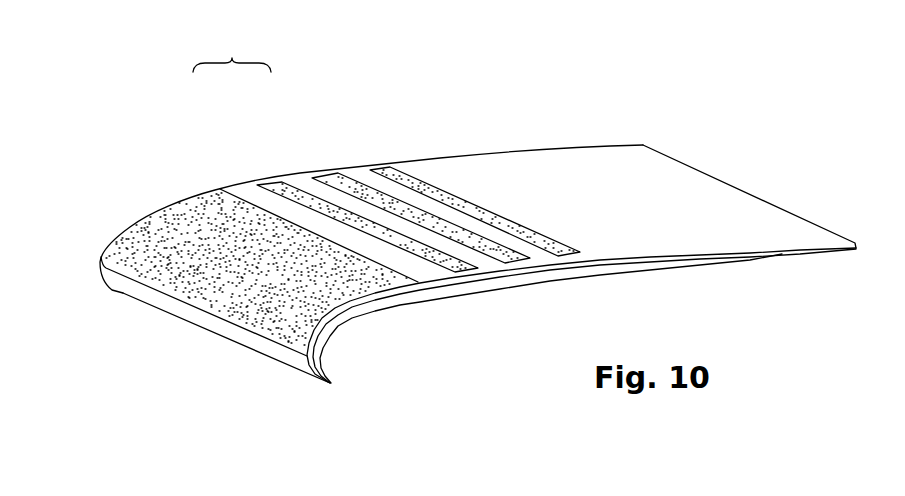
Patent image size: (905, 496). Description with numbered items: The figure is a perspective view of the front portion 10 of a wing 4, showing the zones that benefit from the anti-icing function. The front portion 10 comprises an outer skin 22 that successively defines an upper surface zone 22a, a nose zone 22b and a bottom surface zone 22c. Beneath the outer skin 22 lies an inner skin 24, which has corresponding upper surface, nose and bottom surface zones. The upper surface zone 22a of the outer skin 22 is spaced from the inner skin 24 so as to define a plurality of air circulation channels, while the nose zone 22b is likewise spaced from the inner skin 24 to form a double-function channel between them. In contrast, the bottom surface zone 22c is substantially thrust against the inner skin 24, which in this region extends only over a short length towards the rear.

The vehicle structure 4 is at (469, 237).
The front portion 10 is at (216, 145).
The outer skin 22 is at (513, 140).
The upper surface zone 22a is at (590, 185).
The nose zone 22b is at (157, 275).
The bottom surface zone 22c is at (283, 360).
The inner skin 24 is at (343, 375).